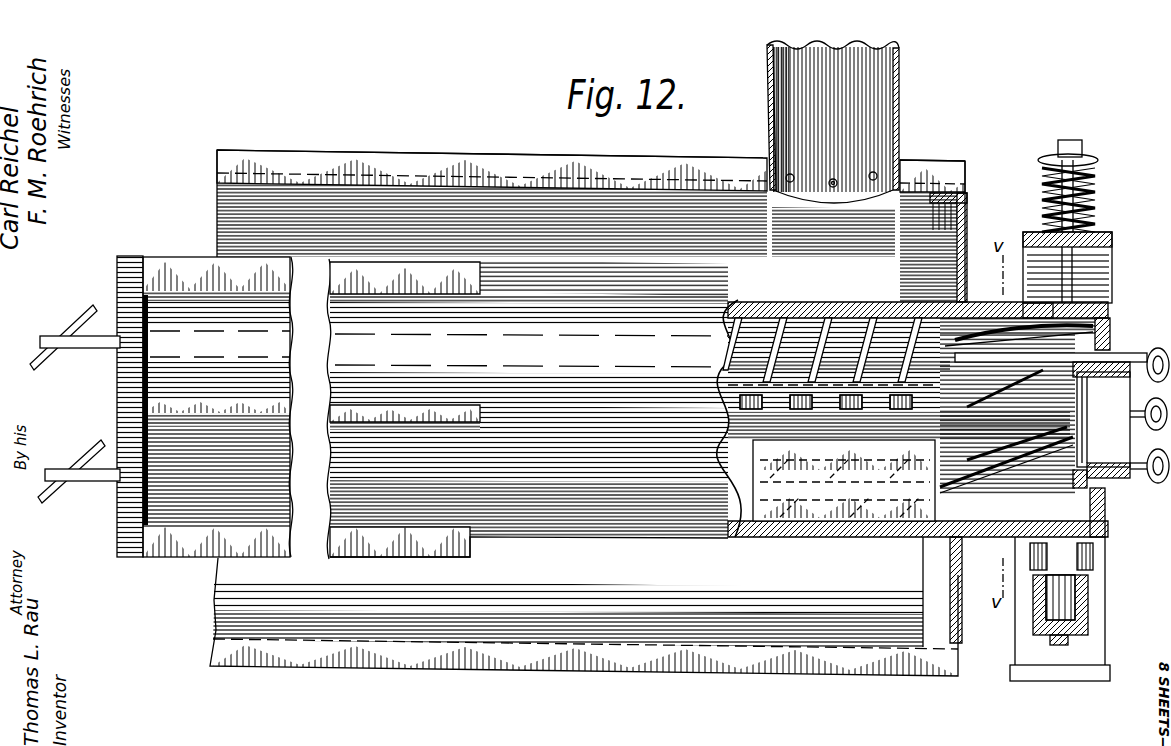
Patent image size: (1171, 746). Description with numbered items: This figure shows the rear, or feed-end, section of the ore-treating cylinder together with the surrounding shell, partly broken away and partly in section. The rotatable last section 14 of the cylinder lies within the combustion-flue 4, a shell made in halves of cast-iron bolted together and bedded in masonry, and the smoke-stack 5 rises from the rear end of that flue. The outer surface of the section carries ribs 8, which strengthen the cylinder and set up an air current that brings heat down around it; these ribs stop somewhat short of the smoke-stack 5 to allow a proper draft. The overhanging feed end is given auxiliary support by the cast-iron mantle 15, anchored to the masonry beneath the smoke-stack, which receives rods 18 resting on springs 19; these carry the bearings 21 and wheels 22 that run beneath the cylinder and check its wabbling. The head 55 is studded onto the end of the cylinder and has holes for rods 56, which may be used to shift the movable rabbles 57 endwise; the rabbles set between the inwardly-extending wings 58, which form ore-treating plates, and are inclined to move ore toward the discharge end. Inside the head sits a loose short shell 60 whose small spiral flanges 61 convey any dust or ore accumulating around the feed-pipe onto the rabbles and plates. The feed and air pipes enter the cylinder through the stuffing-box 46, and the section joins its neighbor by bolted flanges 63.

The combustion-flue 4 is at (392, 183).
The smoke-stack 5 is at (767, 120).
The ribs 8 is at (412, 295).
The last section 14 is at (967, 303).
The mantle 15 is at (1040, 663).
The rods 18 is at (1078, 284).
The springs 19 is at (1090, 196).
The bearings 21 is at (1095, 562).
The wheels 22 is at (1078, 601).
The stuffing-box 46 is at (1106, 490).
The head 55 is at (1105, 331).
The rods 56 is at (1062, 359).
The movable rabbles 57 is at (476, 404).
The wings 58 is at (778, 532).
The loose short shell 60 is at (1026, 310).
The spiral flanges 61 is at (1024, 455).
The flanges 63 is at (117, 541).